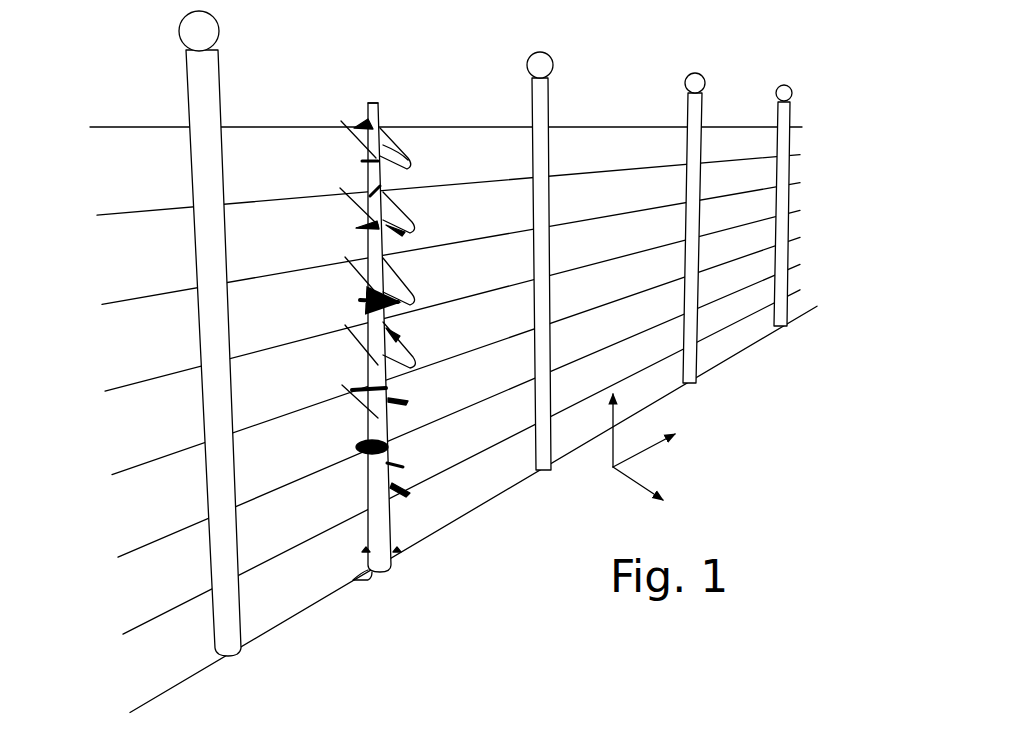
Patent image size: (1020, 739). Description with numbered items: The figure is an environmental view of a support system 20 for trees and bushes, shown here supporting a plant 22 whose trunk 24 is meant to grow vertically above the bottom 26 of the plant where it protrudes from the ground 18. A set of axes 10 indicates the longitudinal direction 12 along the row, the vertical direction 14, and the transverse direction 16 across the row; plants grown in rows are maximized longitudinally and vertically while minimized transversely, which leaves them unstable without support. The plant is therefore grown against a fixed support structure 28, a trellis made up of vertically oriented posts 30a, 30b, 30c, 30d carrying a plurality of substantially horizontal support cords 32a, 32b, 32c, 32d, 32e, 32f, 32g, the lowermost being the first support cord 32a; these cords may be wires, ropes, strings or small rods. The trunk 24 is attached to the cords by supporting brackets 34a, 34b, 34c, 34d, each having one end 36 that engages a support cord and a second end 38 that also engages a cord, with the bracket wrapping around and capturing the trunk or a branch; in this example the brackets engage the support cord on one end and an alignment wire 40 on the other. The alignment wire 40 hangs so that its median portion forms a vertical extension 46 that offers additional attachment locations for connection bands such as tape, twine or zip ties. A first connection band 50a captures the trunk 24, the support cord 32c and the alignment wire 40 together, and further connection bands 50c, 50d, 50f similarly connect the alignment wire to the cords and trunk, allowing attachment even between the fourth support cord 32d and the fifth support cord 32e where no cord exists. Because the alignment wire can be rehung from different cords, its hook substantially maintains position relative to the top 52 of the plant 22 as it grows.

The axes 10 is at (645, 463).
The longitudinal direction 12 is at (655, 448).
The vertical direction 14 is at (617, 415).
The transverse direction 16 is at (637, 486).
The ground 18 is at (280, 622).
The support system 20 is at (304, 108).
The plant 22 is at (392, 531).
The trunk 24 is at (390, 413).
The bottom 26 is at (370, 578).
The fixed support structure 28 is at (136, 76).
The post 30a is at (187, 190).
The post 30b is at (549, 216).
The post 30c is at (687, 178).
The post 30d is at (777, 120).
The first support cord 32a is at (272, 555).
The support cord 32b is at (267, 493).
The support cord 32c is at (262, 423).
The fourth support cord 32d is at (235, 357).
The fifth support cord 32e is at (259, 277).
The support cord 32f is at (268, 200).
The support cord 32g is at (285, 130).
The supporting bracket 34a is at (408, 346).
The supporting bracket 34b is at (400, 278).
The supporting bracket 34c is at (403, 225).
The supporting bracket 34d is at (383, 128).
The one end 36 is at (357, 118).
The second end 38 is at (378, 140).
The alignment wire 40 is at (368, 492).
The vertical extension 46 is at (366, 292).
The first connection band 50a is at (390, 392).
The connection band 50c is at (386, 195).
The connection band 50d is at (367, 193).
The connection band 50f is at (385, 160).
The top 52 is at (375, 100).